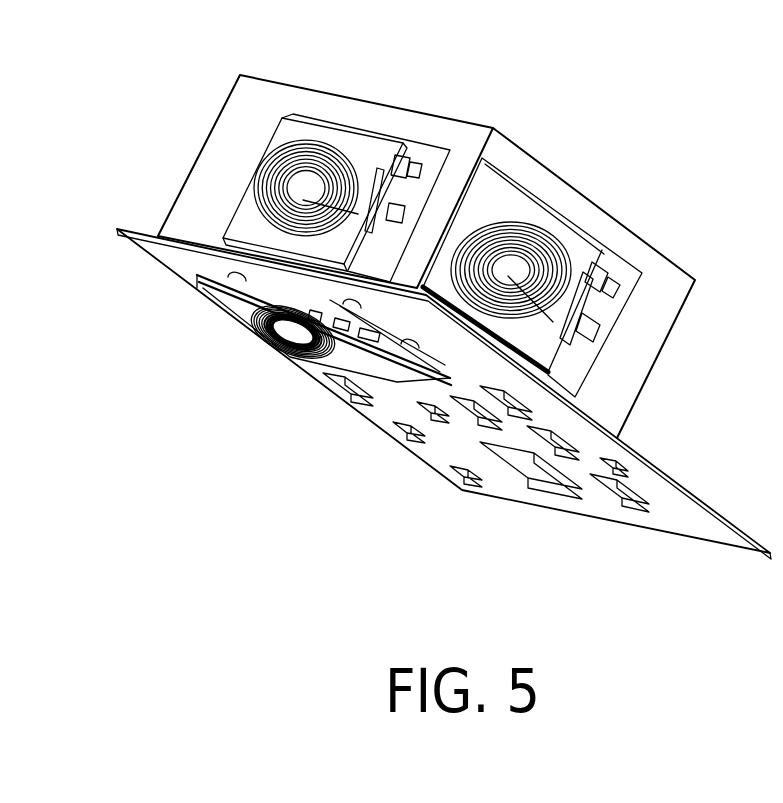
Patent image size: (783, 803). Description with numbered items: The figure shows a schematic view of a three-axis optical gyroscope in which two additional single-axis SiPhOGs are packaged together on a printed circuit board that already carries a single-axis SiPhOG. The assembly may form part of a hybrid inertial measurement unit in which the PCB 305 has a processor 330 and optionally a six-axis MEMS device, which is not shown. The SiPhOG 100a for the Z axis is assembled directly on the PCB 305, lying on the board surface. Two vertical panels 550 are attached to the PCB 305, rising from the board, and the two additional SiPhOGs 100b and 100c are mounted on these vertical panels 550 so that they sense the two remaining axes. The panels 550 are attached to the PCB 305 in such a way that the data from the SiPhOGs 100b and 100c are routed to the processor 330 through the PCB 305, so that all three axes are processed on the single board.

The vertical panels 550 is at (257, 76).
The SiPhOG 100a is at (220, 311).
The SiPhOG 100b is at (609, 215).
The SiPhOG 100c is at (228, 183).
The PCB 305 is at (666, 470).
The processor 330 is at (515, 470).